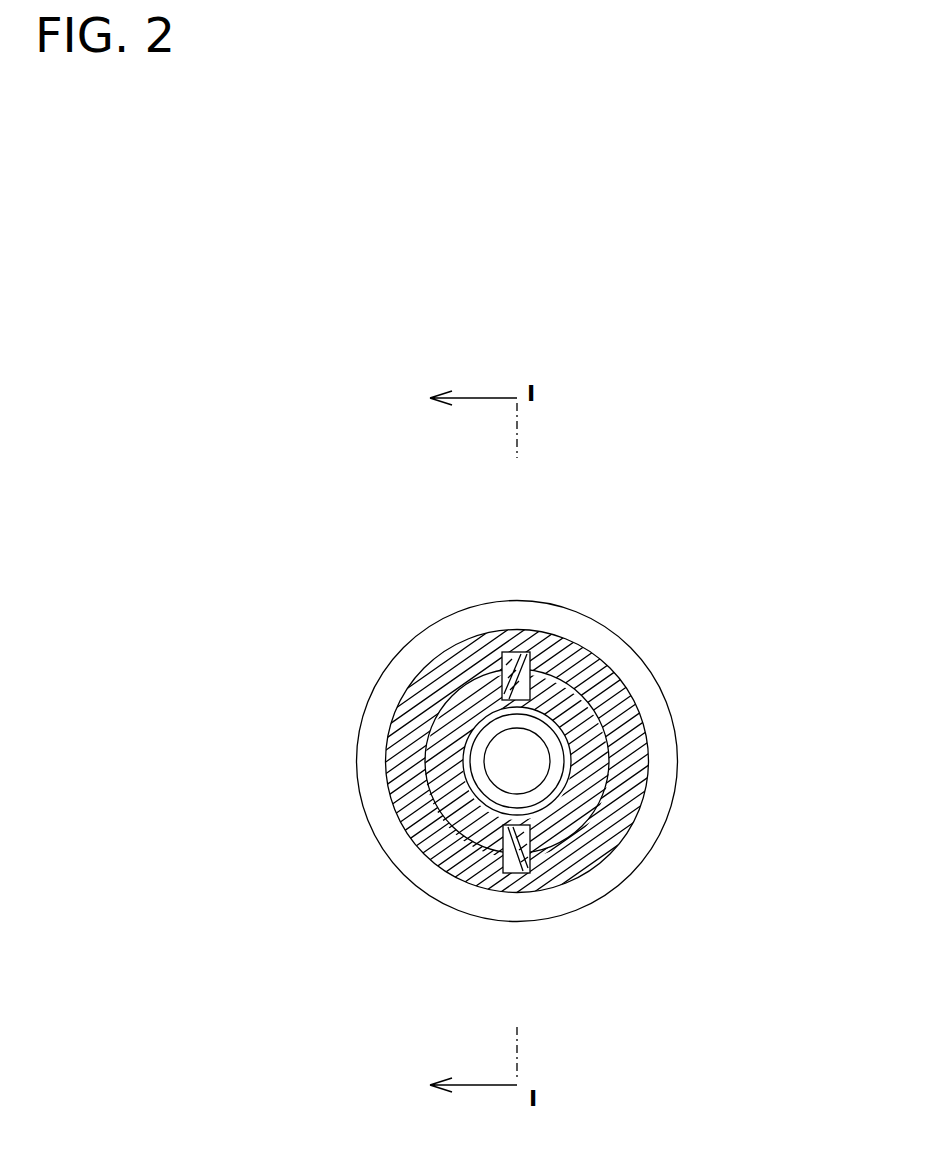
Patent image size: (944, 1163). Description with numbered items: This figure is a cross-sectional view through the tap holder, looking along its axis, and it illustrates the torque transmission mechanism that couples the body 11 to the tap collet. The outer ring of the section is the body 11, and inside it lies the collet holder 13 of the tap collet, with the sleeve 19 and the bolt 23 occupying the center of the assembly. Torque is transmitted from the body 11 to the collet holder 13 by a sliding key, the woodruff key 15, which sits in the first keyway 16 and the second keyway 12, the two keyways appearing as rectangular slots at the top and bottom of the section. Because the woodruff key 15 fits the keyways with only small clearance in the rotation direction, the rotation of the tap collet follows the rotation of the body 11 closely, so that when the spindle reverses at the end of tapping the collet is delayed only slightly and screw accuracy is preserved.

The body 11 is at (372, 689).
The second keyway 12 is at (527, 652).
The collet holder 13 is at (428, 790).
The woodruff key 15 is at (517, 652).
The first keyway 16 is at (502, 682).
The sleeve 19 is at (560, 735).
The bolt 23 is at (551, 764).